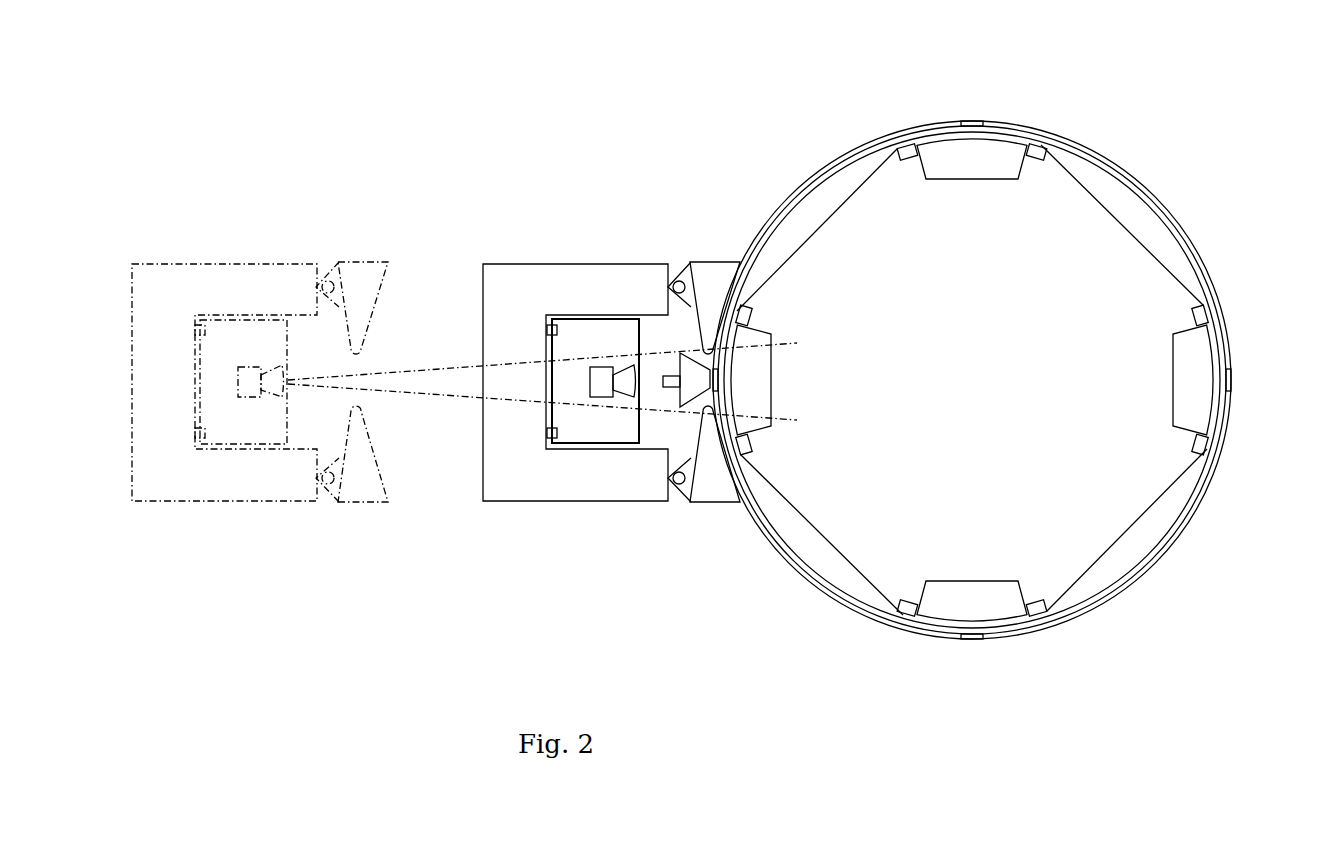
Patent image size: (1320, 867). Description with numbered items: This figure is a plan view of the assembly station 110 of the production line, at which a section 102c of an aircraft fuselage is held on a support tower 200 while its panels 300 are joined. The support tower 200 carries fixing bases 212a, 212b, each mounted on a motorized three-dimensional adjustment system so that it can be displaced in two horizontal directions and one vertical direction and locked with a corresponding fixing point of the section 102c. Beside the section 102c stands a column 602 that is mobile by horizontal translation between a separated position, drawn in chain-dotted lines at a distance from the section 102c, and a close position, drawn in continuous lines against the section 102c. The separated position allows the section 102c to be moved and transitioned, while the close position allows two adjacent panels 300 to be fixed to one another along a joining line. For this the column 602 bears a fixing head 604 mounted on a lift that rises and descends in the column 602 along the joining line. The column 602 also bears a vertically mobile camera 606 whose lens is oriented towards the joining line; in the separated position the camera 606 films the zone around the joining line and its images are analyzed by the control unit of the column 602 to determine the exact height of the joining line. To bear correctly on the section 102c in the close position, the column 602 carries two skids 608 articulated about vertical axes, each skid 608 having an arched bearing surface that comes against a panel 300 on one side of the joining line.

The assembly station 110 is at (678, 620).
The support tower 200 is at (946, 389).
The panel 300 is at (1172, 218).
The section 102c is at (1100, 157).
The fixing base 212a is at (897, 142).
The fixing base 212b is at (728, 312).
The column 602 is at (251, 242).
The fixing head 604 is at (690, 382).
The camera 606 is at (253, 386).
The skid 608 is at (707, 493).